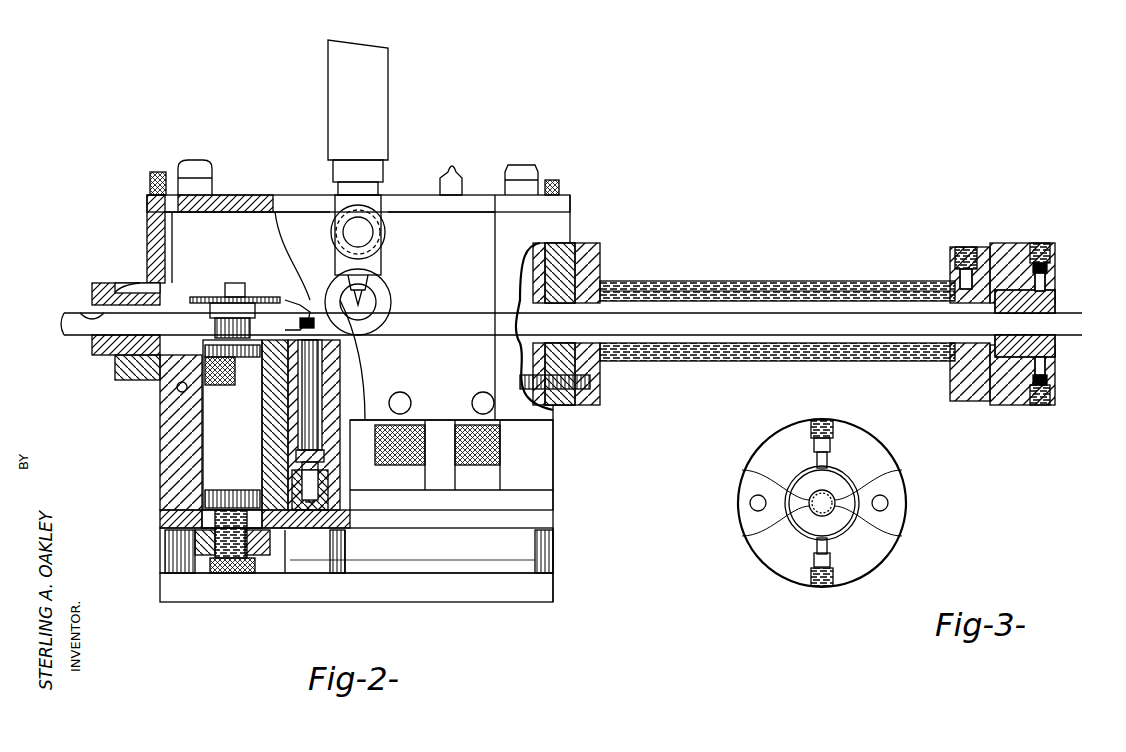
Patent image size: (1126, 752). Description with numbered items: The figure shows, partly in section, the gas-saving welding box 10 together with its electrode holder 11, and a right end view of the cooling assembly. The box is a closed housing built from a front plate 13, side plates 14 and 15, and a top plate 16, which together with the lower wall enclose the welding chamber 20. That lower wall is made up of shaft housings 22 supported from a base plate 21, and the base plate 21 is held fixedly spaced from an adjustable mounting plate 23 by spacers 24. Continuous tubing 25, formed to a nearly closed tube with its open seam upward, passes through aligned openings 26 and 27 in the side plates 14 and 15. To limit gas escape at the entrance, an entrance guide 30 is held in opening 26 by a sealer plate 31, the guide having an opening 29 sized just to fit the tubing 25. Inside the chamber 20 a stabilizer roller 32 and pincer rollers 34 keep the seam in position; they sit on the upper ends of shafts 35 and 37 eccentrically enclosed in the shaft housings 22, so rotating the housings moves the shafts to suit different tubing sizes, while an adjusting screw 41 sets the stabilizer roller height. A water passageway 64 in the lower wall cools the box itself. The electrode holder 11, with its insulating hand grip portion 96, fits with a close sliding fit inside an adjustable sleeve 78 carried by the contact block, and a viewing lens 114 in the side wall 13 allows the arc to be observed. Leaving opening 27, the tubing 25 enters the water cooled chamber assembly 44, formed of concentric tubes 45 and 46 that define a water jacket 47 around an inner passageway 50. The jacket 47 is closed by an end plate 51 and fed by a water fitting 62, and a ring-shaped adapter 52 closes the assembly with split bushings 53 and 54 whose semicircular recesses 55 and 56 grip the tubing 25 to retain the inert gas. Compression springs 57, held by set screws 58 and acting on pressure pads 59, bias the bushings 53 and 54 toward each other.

In FIG. 2, the welding box 10 is at (494, 637).
In FIG. 2, the electrode holder 11 is at (318, 88).
In FIG. 2, the front plate 13 is at (500, 235).
In FIG. 2, the side plate 14 is at (175, 446).
In FIG. 2, the side plate 15 is at (565, 245).
In FIG. 2, the top plate 16 is at (468, 196).
In FIG. 2, the welding chamber 20 is at (240, 236).
In FIG. 2, the base plate 21 is at (170, 520).
In FIG. 2, the shaft housing 22 is at (275, 468).
In FIG. 2, the mounting plate 23 is at (175, 588).
In FIG. 2, the spacer 24 is at (165, 550).
In FIG. 2, the tubing 25 is at (70, 338).
In FIG. 3, the tubing 25 is at (835, 520).
In FIG. 2, the opening 26 is at (132, 283).
In FIG. 2, the opening 27 is at (530, 305).
In FIG. 2, the opening 29 is at (92, 314).
In FIG. 2, the entrance guide 30 is at (100, 350).
In FIG. 2, the sealer plate 31 is at (128, 382).
In FIG. 2, the stabilizer roller 32 is at (170, 300).
In FIG. 2, the pincer roller 34 is at (293, 298).
In FIG. 2, the shaft 35 is at (215, 324).
In FIG. 2, the shaft 37 is at (300, 425).
In FIG. 2, the adjusting screw 41 is at (215, 565).
In FIG. 2, the water cooled chamber assembly 44 is at (752, 282).
In FIG. 2, the concentric tube 45 is at (788, 300).
In FIG. 2, the concentric tube 46 is at (840, 285).
In FIG. 2, the water jacket 47 is at (660, 286).
In FIG. 2, the inner passageway 50 is at (650, 360).
In FIG. 2, the end plate 51 is at (950, 258).
In FIG. 2, the adapter 52 is at (1050, 273).
In FIG. 3, the adapter 52 is at (906, 488).
In FIG. 2, the split bushing 53 is at (1055, 320).
In FIG. 3, the split bushing 53 is at (838, 483).
In FIG. 2, the split bushing 54 is at (1055, 348).
In FIG. 3, the split bushing 54 is at (838, 530).
In FIG. 3, the semicircular recess 55 is at (785, 493).
In FIG. 3, the semicircular recess 56 is at (750, 544).
In FIG. 2, the compression spring 57 is at (1048, 268).
In FIG. 3, the compression spring 57 is at (830, 445).
In FIG. 2, the set screw 58 is at (1045, 243).
In FIG. 3, the set screw 58 is at (822, 420).
In FIG. 2, the pressure pad 59 is at (1045, 288).
In FIG. 3, the pressure pad 59 is at (817, 460).
In FIG. 2, the water fitting 62 is at (968, 247).
In FIG. 2, the water passageway 64 is at (180, 392).
In FIG. 2, the adjustable sleeve 78 is at (383, 170).
In FIG. 2, the hand grip portion 96 is at (365, 88).
In FIG. 2, the viewing lens 114 is at (378, 318).